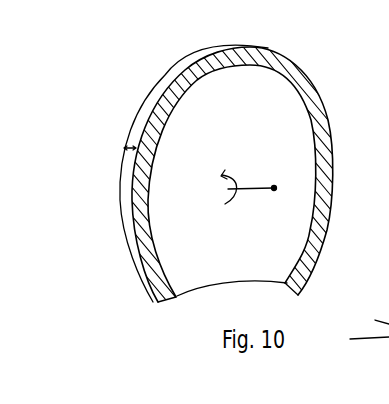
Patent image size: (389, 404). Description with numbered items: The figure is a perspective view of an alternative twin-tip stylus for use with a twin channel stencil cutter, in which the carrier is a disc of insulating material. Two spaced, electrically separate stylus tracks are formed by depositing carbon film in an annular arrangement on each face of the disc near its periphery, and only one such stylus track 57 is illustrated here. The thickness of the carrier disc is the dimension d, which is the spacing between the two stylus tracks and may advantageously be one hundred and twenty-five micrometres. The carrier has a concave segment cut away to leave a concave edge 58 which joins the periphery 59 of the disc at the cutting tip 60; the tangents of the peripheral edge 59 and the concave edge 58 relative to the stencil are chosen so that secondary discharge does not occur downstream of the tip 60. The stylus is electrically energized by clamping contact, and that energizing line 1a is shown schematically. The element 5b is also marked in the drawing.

The stylus track 57 is at (129, 175).
The wheel rim 5b is at (302, 152).
The periphery of the disc 59 is at (130, 238).
The dimension d is at (135, 146).
The cutting tip 60 is at (161, 303).
The concave edge 58 is at (192, 294).
The energizing line 1a is at (258, 189).